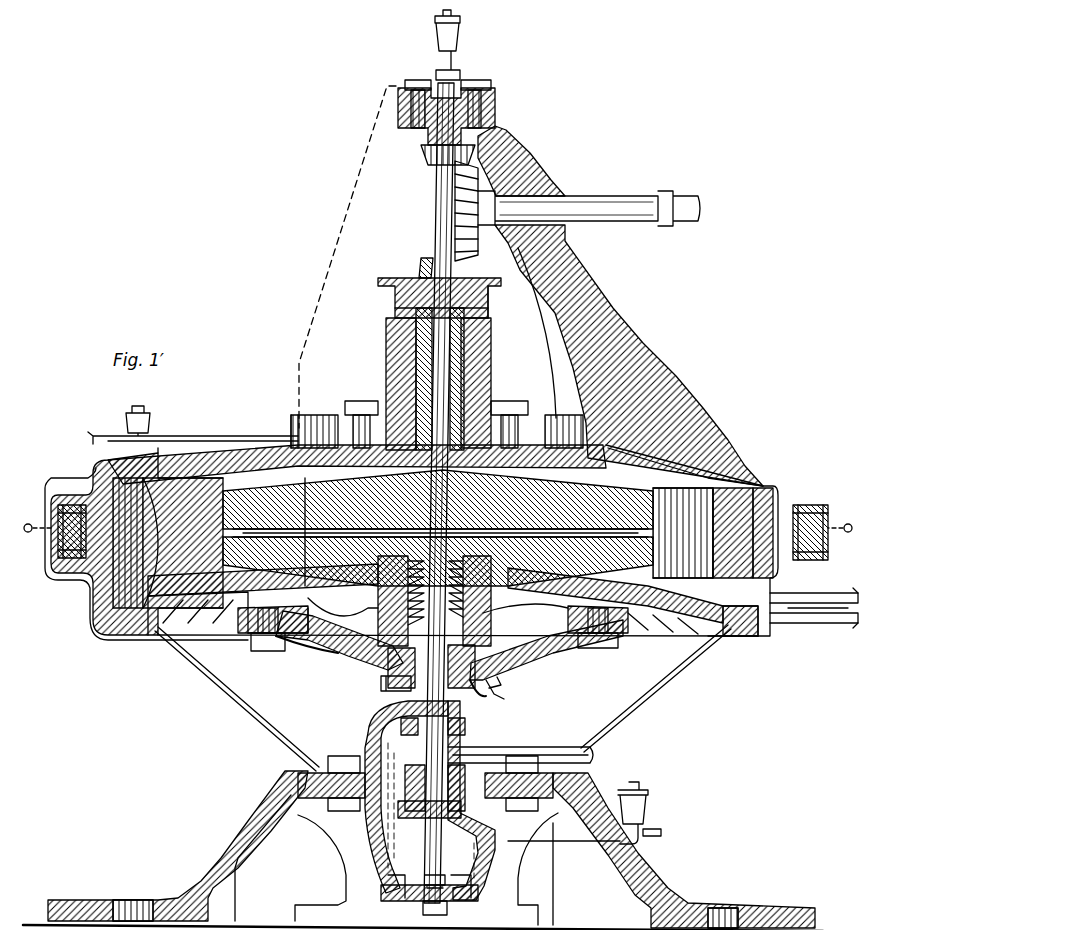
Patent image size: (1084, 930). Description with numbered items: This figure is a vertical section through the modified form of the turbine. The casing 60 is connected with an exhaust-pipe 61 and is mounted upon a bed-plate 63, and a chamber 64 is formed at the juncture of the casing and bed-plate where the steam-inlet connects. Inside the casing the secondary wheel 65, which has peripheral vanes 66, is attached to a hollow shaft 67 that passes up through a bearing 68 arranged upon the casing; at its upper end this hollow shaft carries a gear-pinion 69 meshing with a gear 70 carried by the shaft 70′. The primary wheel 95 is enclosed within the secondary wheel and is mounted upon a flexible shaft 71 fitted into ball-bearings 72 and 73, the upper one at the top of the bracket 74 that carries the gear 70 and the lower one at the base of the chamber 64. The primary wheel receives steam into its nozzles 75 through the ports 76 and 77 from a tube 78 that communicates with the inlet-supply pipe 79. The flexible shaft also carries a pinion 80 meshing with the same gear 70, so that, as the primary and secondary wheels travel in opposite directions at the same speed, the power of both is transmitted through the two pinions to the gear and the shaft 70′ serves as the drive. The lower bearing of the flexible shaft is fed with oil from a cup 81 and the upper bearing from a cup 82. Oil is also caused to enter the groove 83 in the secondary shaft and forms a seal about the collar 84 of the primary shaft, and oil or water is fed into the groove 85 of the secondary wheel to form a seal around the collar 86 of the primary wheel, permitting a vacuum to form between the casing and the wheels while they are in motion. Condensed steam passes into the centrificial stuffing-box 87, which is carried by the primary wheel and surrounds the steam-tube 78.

The casing 60 is at (225, 440).
The exhaust-pipe 61 is at (805, 603).
The bed-plate 63 is at (245, 818).
The chamber 64 is at (372, 747).
The secondary wheel 65 is at (695, 630).
The peripheral vanes 66 is at (424, 543).
The hollow shaft 67 is at (378, 368).
The bearing 68 is at (484, 355).
The gear-pinion 69 is at (412, 258).
The gear 70 is at (470, 244).
The shaft 70′ is at (589, 194).
The flexible shaft 71 is at (428, 205).
The ball-bearing 72 is at (490, 99).
The ball-bearing 73 is at (443, 900).
The bracket 74 is at (583, 282).
The nozzles 75 is at (423, 613).
The port 76 is at (537, 630).
The port 77 is at (640, 532).
The tube 78 is at (488, 695).
The inlet-supply pipe 79 is at (530, 742).
The pinion 80 is at (414, 152).
The cup 81 is at (640, 799).
The cup 82 is at (428, 30).
The groove 83 is at (482, 307).
The collar 84 is at (386, 300).
The groove 85 is at (552, 628).
The collar 86 is at (335, 622).
The centrificial stuffing-box 87 is at (375, 645).
The primary wheel 95 is at (690, 457).